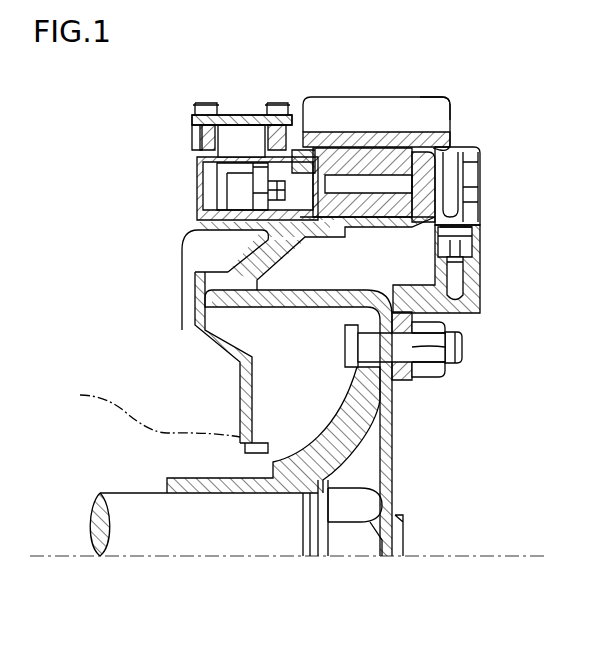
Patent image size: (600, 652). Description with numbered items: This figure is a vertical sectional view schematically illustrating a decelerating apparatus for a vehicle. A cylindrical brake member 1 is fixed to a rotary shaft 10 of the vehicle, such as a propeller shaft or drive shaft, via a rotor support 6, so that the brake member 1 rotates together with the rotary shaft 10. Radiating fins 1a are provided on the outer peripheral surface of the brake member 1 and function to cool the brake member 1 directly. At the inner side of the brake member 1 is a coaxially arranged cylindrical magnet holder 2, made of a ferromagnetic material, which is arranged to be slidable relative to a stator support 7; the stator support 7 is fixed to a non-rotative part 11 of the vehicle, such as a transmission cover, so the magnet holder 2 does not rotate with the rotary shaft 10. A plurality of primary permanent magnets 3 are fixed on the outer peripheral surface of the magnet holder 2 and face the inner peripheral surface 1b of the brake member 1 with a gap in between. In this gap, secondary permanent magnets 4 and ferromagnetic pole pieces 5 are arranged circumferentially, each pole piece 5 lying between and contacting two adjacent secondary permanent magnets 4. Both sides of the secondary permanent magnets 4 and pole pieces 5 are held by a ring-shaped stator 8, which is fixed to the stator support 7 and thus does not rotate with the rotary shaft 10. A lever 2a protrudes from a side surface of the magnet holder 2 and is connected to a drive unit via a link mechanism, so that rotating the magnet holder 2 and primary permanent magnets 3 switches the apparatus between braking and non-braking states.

The brake member 1 is at (416, 107).
The radiating fins 1a is at (440, 105).
The inner peripheral surface 1b is at (432, 150).
The magnet holder 2 is at (415, 210).
The lever 2a is at (290, 195).
The primary permanent magnets 3 is at (362, 186).
The secondary permanent magnets 4 is at (376, 110).
The ferromagnetic pole pieces 5 is at (395, 155).
The rotor support 6 is at (455, 175).
The stator support 7 is at (203, 274).
The stator 8 is at (430, 167).
The rotary shaft 10 is at (218, 548).
The non-rotative part 11 is at (185, 425).